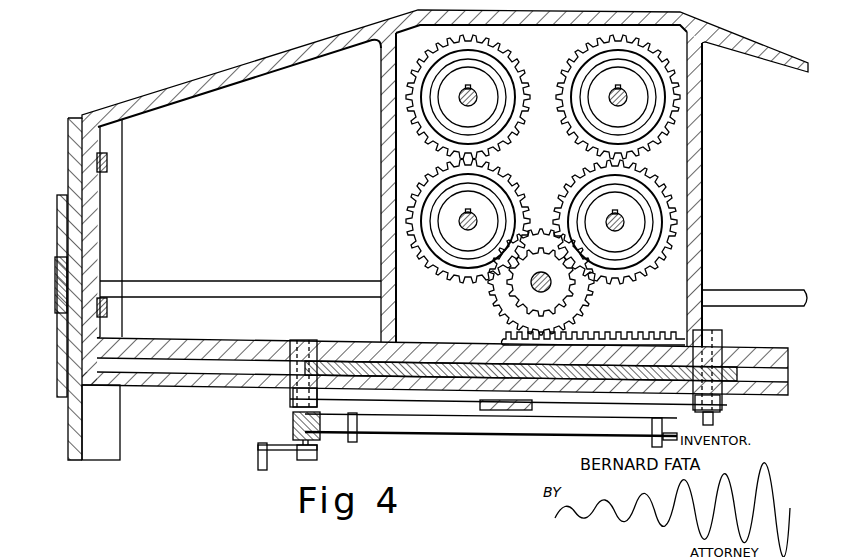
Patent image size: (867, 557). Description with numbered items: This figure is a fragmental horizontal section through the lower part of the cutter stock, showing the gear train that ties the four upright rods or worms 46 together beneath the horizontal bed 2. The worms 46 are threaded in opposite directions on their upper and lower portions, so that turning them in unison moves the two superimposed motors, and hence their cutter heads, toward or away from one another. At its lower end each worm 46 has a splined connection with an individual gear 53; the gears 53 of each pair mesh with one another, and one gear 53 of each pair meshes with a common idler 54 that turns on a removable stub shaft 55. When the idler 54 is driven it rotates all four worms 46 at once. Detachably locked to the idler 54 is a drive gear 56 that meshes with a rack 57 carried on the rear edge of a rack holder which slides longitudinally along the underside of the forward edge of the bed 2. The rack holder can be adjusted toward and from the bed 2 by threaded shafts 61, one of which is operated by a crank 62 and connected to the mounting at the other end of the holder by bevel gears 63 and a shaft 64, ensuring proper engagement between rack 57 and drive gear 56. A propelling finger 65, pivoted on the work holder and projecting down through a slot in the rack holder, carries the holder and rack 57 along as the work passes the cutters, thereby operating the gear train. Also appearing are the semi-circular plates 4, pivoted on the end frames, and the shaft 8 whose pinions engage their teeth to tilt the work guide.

The horizontal bed 2 is at (189, 85).
The semi-circular plates 4 is at (57, 233).
The shaft 8 is at (208, 281).
The upright rods or worms 46 is at (456, 99).
The individual gear 53 is at (533, 70).
The common idler 54 is at (582, 295).
The removable stub shaft 55 is at (535, 285).
The drive gear 56 is at (582, 321).
The rack 57 is at (712, 341).
The threaded shafts 61 is at (290, 400).
The crank 62 is at (262, 463).
The bevel gears 63 is at (292, 416).
The shaft 64 is at (437, 437).
The propelling finger 65 is at (513, 410).